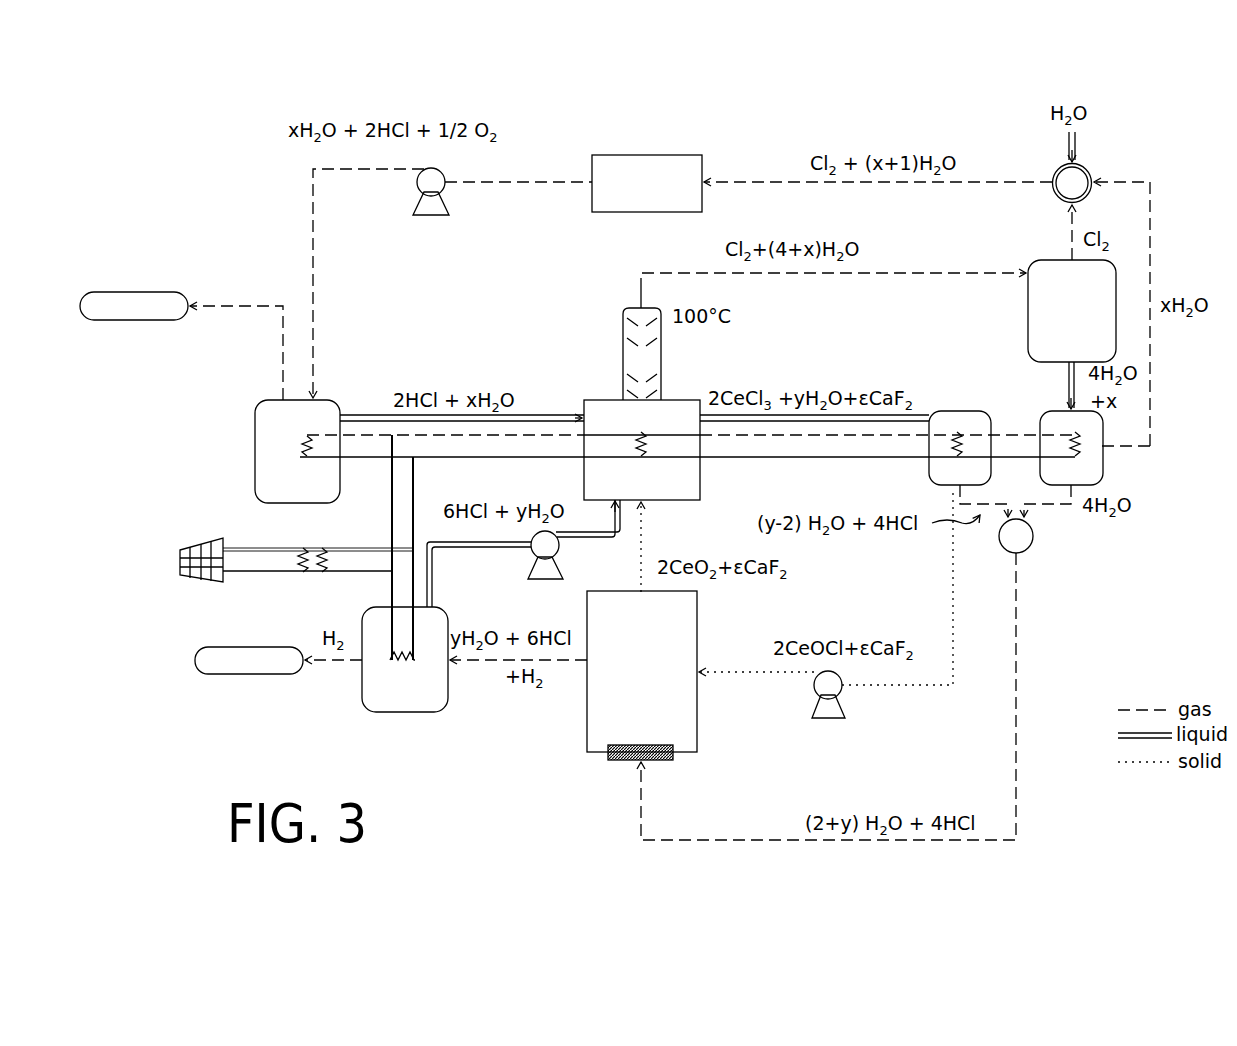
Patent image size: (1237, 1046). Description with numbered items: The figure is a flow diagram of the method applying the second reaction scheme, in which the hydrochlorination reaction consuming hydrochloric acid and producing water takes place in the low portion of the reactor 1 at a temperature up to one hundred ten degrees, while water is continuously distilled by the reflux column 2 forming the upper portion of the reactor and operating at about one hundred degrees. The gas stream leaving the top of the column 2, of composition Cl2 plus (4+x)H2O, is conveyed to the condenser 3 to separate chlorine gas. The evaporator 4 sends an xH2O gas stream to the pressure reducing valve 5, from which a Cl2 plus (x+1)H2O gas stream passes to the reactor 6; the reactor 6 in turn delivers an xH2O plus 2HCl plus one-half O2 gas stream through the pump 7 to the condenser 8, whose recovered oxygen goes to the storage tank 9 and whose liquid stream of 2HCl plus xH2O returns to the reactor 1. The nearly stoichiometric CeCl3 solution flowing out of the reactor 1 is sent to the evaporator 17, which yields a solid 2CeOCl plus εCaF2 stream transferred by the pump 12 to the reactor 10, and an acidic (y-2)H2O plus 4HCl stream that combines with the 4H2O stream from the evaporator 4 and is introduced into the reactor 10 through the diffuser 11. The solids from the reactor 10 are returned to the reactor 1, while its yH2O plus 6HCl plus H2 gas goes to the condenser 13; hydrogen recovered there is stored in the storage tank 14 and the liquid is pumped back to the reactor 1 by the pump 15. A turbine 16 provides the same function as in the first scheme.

The reactor 1 is at (642, 450).
The reflux column 2 is at (642, 354).
The condenser 3 is at (1072, 311).
The evaporator 4 is at (1069, 432).
The pressure reducing valve 5 is at (1072, 183).
The reactor 6 is at (647, 183).
The pump 7 is at (443, 184).
The condenser 8 is at (297, 451).
The storage tank 9 is at (134, 292).
The reactor 10 is at (642, 671).
The diffuser 11 is at (630, 769).
The pump 12 is at (851, 696).
The condenser 13 is at (405, 659).
The storage tank 14 is at (249, 648).
The pump 15 is at (566, 555).
The turbine 16 is at (197, 548).
The evaporator 17 is at (960, 432).